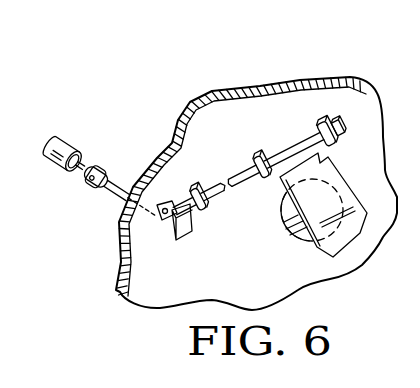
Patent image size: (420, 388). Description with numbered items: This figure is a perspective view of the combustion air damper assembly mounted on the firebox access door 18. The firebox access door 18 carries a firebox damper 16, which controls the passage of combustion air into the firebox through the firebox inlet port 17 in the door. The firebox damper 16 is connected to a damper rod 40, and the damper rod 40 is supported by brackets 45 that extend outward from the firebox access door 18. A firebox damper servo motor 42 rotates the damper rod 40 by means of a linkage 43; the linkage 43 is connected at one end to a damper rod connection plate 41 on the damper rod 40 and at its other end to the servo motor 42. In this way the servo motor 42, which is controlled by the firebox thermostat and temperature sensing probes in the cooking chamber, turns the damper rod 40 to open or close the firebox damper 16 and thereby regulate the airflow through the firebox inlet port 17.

The firebox damper 16 is at (327, 170).
The firebox inlet port 17 is at (287, 215).
The firebox access door 18 is at (298, 80).
The damper rod 40 is at (250, 172).
The damper rod connection plate 41 is at (183, 229).
The firebox damper servo motor 42 is at (70, 152).
The linkage 43 is at (95, 190).
The brackets 45 is at (316, 126).